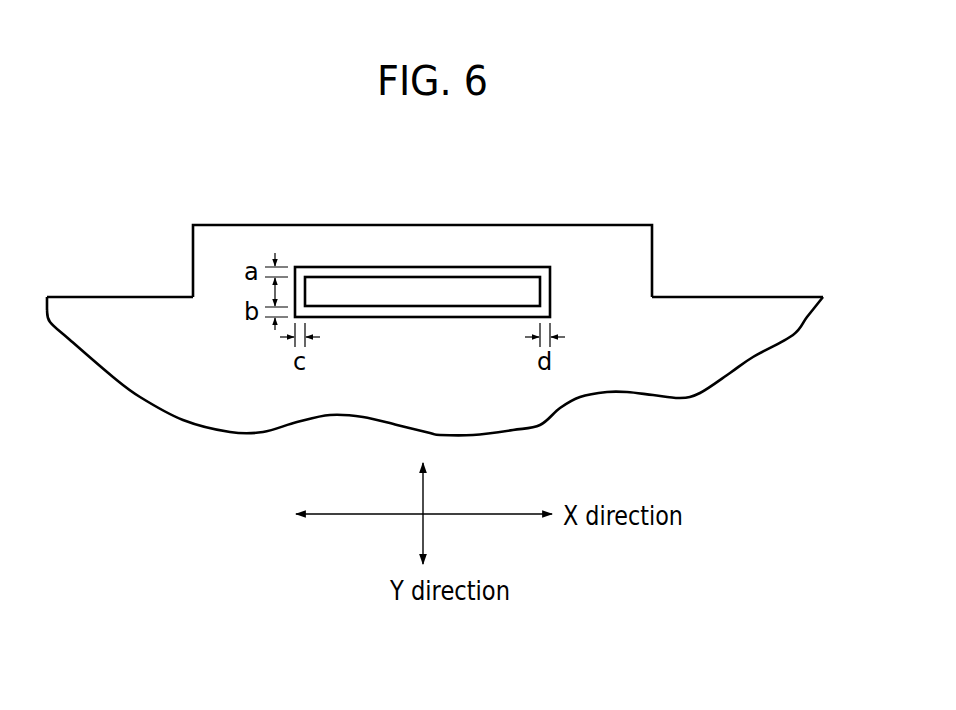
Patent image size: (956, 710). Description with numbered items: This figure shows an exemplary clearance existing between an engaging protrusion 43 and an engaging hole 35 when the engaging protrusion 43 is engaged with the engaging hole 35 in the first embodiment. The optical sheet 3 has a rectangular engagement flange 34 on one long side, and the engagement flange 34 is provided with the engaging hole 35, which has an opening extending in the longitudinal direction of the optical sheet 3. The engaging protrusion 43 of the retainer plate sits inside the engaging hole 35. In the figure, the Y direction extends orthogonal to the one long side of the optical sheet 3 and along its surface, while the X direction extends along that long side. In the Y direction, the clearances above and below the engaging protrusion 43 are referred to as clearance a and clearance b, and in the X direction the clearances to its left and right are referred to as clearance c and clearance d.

The optical sheet 3 is at (715, 296).
The engagement flange 34 is at (247, 242).
The engaging hole 35 is at (548, 278).
The engaging protrusion 43 is at (432, 288).